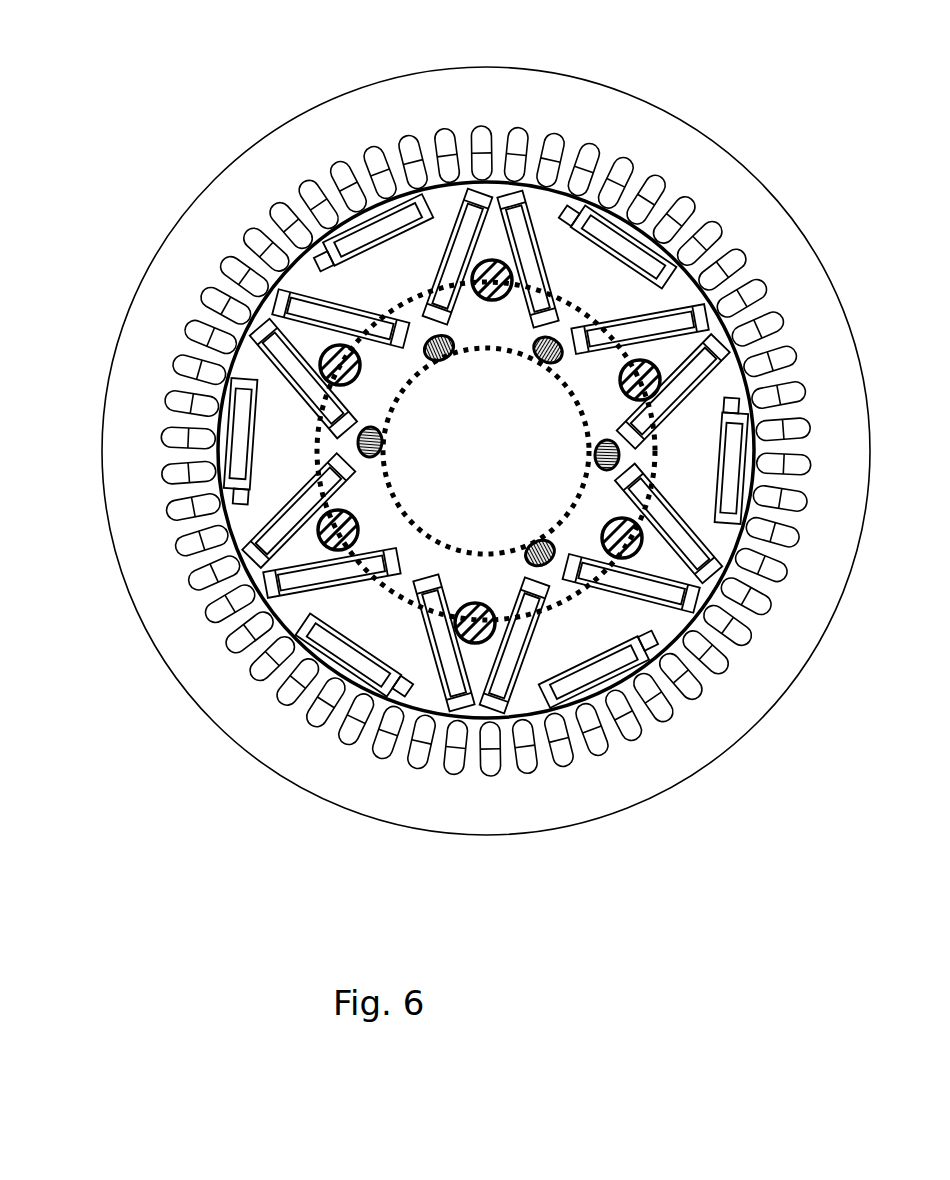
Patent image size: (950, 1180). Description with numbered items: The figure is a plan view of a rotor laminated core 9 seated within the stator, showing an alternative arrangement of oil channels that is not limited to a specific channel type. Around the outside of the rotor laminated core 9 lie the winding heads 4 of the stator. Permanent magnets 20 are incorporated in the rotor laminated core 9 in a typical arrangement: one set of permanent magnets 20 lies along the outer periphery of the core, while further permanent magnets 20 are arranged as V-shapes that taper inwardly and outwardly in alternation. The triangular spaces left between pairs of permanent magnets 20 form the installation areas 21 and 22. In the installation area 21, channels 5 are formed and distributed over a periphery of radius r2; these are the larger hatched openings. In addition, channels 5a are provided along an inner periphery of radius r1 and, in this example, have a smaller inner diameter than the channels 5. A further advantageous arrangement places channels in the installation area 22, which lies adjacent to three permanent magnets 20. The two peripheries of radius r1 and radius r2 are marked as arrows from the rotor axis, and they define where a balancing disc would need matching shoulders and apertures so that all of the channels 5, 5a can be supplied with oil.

The winding heads 4 is at (233, 263).
The rotor laminated core 9 is at (357, 607).
The permanent magnets 20 is at (382, 242).
The installation area 21 is at (501, 200).
The installation area 22 is at (583, 256).
The channels 5 is at (293, 529).
The channels 5a is at (550, 337).
The radius r1 is at (486, 451).
The radius r2 is at (486, 451).